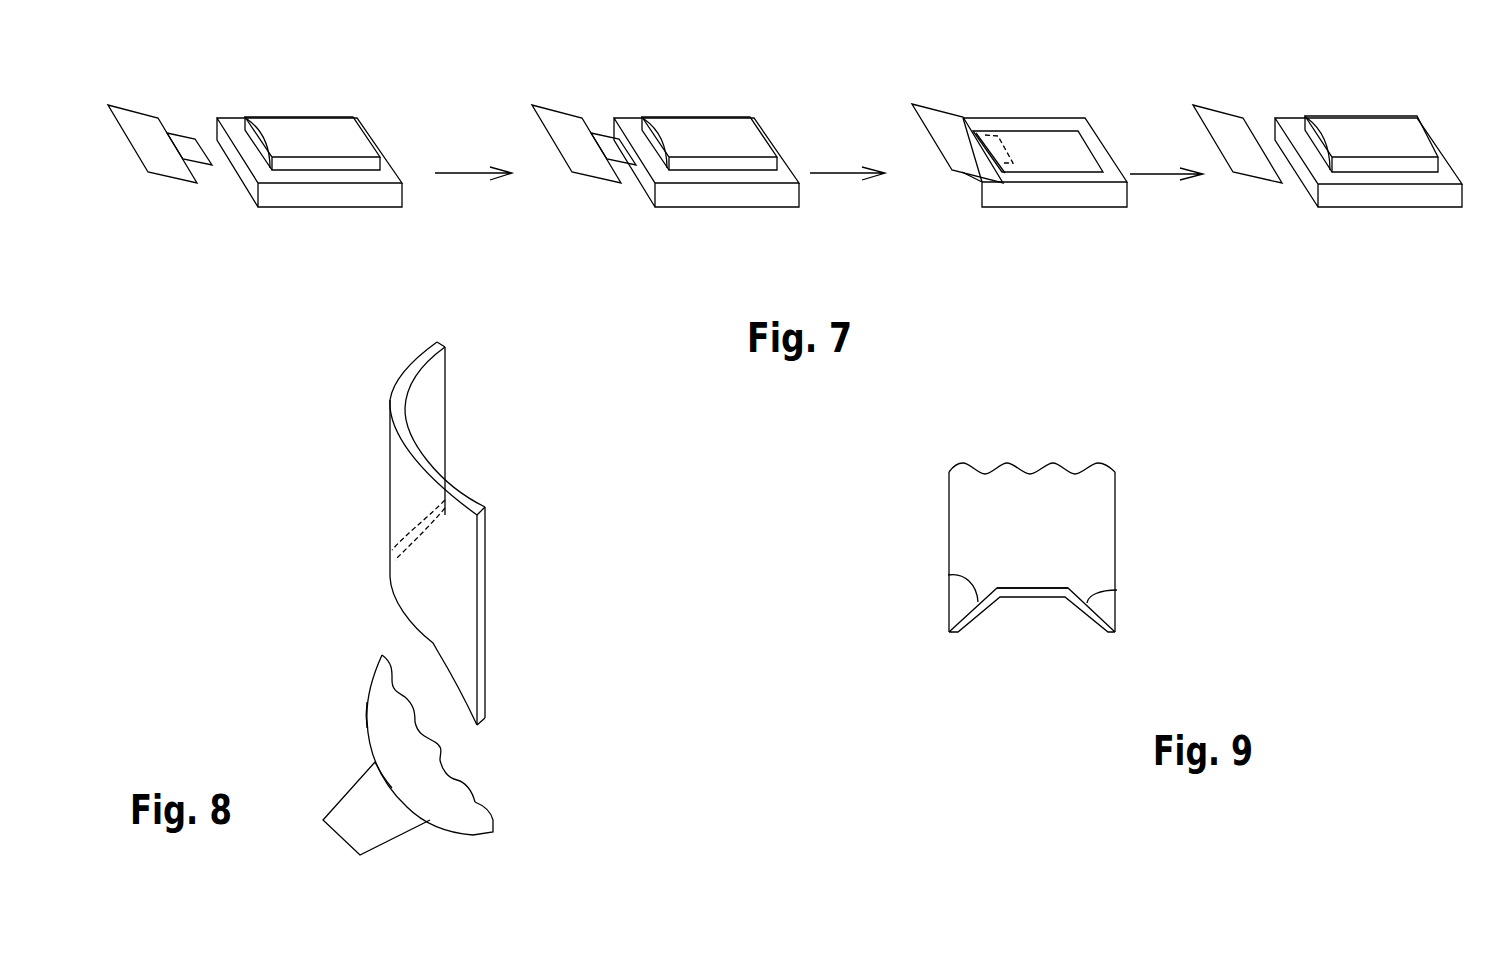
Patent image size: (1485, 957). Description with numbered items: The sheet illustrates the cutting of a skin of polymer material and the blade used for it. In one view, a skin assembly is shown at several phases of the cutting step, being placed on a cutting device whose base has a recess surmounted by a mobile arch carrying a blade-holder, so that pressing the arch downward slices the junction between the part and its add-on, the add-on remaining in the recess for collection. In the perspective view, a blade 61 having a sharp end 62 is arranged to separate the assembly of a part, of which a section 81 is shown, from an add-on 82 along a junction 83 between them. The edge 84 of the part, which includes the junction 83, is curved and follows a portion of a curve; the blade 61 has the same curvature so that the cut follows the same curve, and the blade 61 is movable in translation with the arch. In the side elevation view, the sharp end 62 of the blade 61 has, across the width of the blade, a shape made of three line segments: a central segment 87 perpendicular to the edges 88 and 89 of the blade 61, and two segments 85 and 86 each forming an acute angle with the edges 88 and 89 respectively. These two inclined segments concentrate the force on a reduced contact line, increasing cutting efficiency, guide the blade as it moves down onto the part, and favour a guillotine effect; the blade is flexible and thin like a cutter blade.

In FIG. 8, the blade 61 is at (418, 533).
In FIG. 9, the blade 61 is at (1030, 587).
In FIG. 8, the sharp end 62 is at (392, 578).
In FIG. 9, the sharp end 62 is at (1042, 592).
In FIG. 8, the section of the part 81 is at (409, 771).
In FIG. 8, the add-on 82 is at (397, 827).
In FIG. 8, the junction 83 is at (392, 788).
In FIG. 8, the edge of the part 84 is at (367, 702).
In FIG. 9, the inclined segment 85 is at (948, 575).
In FIG. 9, the inclined segment 86 is at (1117, 590).
In FIG. 9, the central segment 87 is at (1032, 649).
In FIG. 9, the edge of the blade 88 is at (949, 503).
In FIG. 9, the edge of the blade 89 is at (1115, 498).